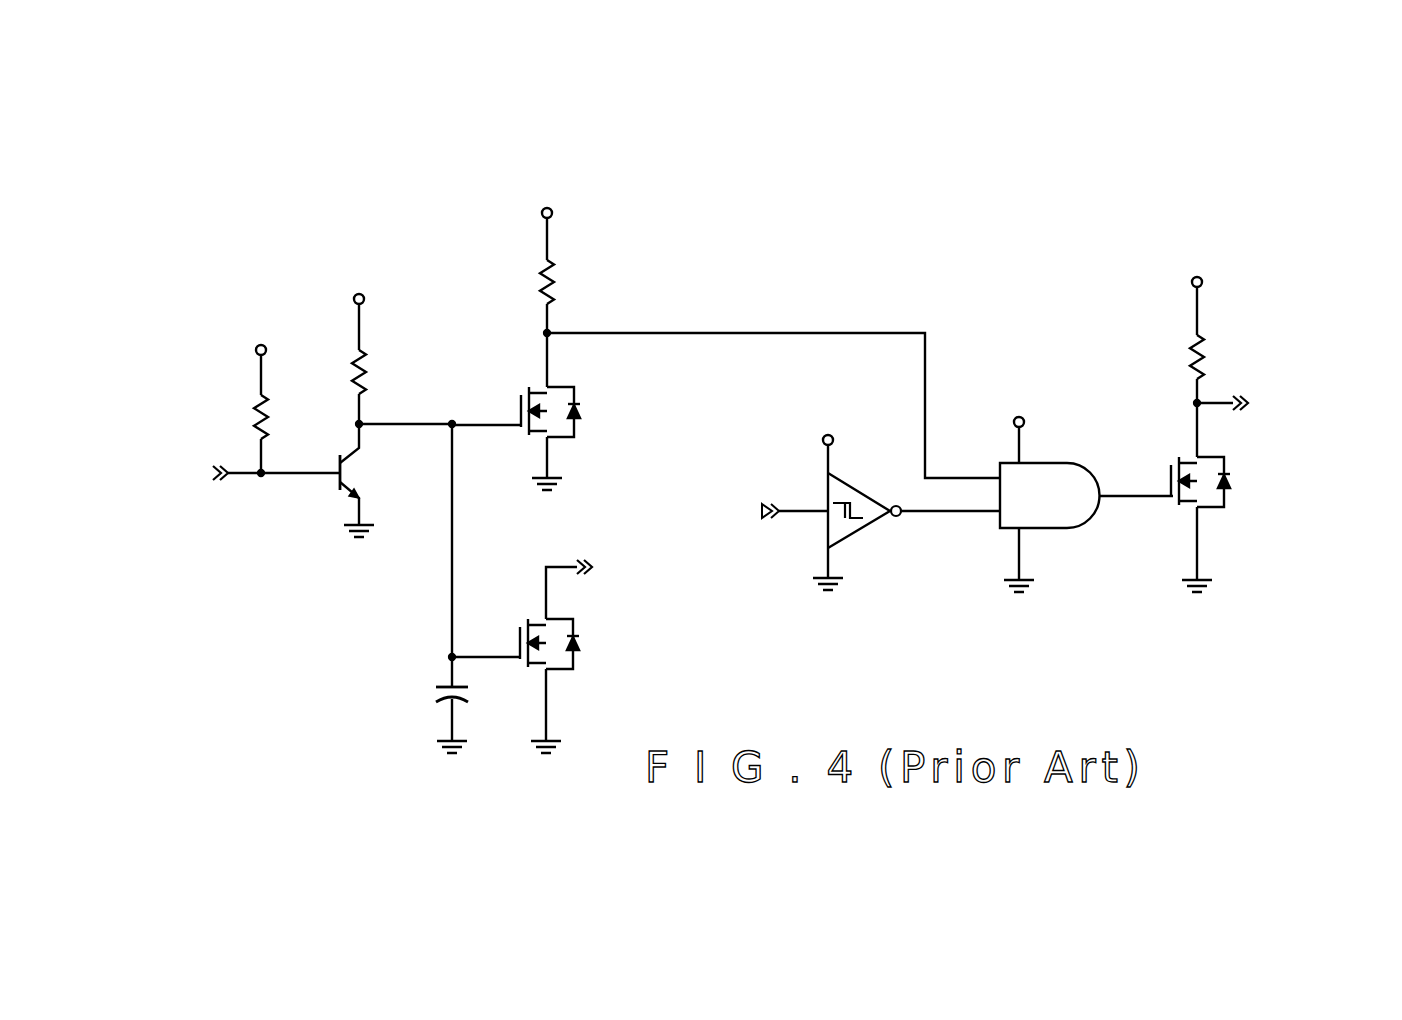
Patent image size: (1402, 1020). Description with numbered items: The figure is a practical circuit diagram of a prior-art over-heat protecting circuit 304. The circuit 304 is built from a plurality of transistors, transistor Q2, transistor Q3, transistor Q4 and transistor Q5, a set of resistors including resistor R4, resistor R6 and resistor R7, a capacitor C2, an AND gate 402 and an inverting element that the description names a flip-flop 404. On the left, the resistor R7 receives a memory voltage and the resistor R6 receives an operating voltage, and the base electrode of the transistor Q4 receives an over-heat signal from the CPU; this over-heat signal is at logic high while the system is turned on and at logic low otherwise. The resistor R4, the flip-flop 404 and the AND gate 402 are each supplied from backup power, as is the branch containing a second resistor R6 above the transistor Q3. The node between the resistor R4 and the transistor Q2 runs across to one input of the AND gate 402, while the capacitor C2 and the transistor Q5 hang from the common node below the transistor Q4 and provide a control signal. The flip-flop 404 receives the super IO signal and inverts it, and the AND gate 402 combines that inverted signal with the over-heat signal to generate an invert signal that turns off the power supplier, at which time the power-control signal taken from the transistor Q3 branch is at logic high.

The over-heat protecting circuit 304 is at (146, 199).
The AND gate 402 is at (1040, 462).
The flip-flop 404 is at (853, 486).
The transistor Q2 is at (516, 411).
The transistor Q3 is at (1193, 497).
The transistor Q4 is at (364, 480).
The transistor Q5 is at (522, 656).
The resistor R4 is at (560, 275).
The resistor R6 is at (792, 355).
The resistor R7 is at (275, 414).
The capacitor C2 is at (466, 705).